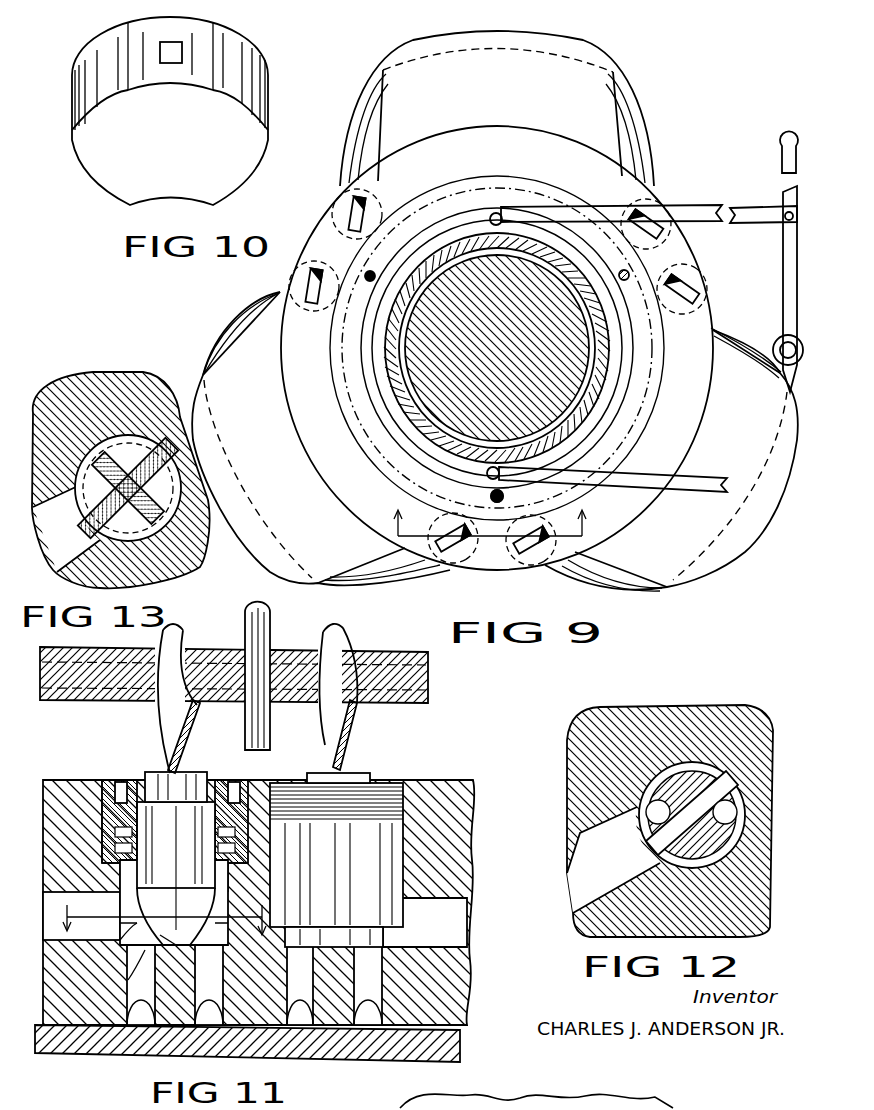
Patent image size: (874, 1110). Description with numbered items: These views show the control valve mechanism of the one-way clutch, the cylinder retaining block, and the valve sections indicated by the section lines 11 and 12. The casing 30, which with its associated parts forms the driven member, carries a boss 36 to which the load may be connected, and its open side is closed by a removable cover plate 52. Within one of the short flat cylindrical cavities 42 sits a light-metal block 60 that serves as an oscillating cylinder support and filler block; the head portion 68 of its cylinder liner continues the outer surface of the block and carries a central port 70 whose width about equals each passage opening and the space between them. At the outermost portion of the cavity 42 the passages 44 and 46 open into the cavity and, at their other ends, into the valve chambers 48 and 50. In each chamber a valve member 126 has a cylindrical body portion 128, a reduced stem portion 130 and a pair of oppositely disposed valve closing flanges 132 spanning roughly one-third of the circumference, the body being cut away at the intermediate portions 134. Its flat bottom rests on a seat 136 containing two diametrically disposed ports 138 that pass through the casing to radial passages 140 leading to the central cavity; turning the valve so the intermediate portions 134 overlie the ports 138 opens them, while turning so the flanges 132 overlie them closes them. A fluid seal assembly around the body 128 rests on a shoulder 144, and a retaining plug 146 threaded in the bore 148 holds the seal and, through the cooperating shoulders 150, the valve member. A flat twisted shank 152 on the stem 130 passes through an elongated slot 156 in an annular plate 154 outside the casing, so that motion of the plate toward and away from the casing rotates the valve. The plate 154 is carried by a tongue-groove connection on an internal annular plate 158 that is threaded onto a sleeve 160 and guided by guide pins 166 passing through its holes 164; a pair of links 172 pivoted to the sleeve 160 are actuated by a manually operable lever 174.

In FIG. 9, the section line 11— 11 is at (490, 514).
In FIG. 11, the section line 12— 12 is at (162, 915).
In FIG. 9, the casing 30 is at (495, 311).
In FIG. 13, the casing 30 is at (118, 380).
In FIG. 11, the casing 30 is at (470, 786).
In FIG. 12, the casing 30 is at (710, 718).
In FIG. 9, the boss 36 is at (447, 403).
In FIG. 11, the cavity 42 is at (102, 843).
In FIG. 11, the passage 44 is at (81, 916).
In FIG. 11, the passage 46 is at (425, 922).
In FIG. 11, the valve chamber 48 is at (130, 875).
In FIG. 11, the valve chamber 50 is at (372, 867).
In FIG. 11, the cover plate 52 is at (462, 1048).
In FIG. 10, the block 60 is at (262, 157).
In FIG. 10, the head portion 68 is at (200, 28).
In FIG. 10, the port 70 is at (178, 33).
In FIG. 11, the valve member 126 is at (138, 790).
In FIG. 11, the cylindrical body portion 128 is at (174, 873).
In FIG. 11, the stem portion 130 is at (176, 787).
In FIG. 13, the valve closing flanges 132 is at (165, 452).
In FIG. 11, the valve closing flanges 132 is at (130, 925).
In FIG. 12, the valve closing flanges 132 is at (692, 817).
In FIG. 11, the intermediate portions 134 is at (143, 908).
In FIG. 12, the intermediate portions 134 is at (747, 791).
In FIG. 13, the seat 136 is at (176, 572).
In FIG. 11, the ports 138 is at (254, 984).
In FIG. 12, the ports 138 is at (691, 812).
In FIG. 11, the radial passages 140 is at (368, 1032).
In FIG. 11, the shoulder 144 is at (112, 870).
In FIG. 11, the retaining plug 146 is at (230, 781).
In FIG. 11, the bore 148 is at (112, 783).
In FIG. 11, the cooperating shoulders 150 is at (120, 790).
In FIG. 9, the flat twisted shank 152 is at (700, 291).
In FIG. 11, the flat twisted shank 152 is at (358, 716).
In FIG. 9, the annular plate 154 is at (713, 398).
In FIG. 11, the annular plate 154 is at (430, 701).
In FIG. 9, the elongated slots 156 is at (467, 540).
In FIG. 11, the elongated slots 156 is at (183, 634).
In FIG. 9, the internal annular plate 158 is at (643, 397).
In FIG. 9, the sleeve 160 is at (617, 398).
In FIG. 9, the holes 164 is at (380, 265).
In FIG. 9, the guide pins 166 is at (504, 496).
In FIG. 11, the guide pins 166 is at (270, 614).
In FIG. 9, the links 172 is at (688, 210).
In FIG. 9, the lever 174 is at (782, 157).